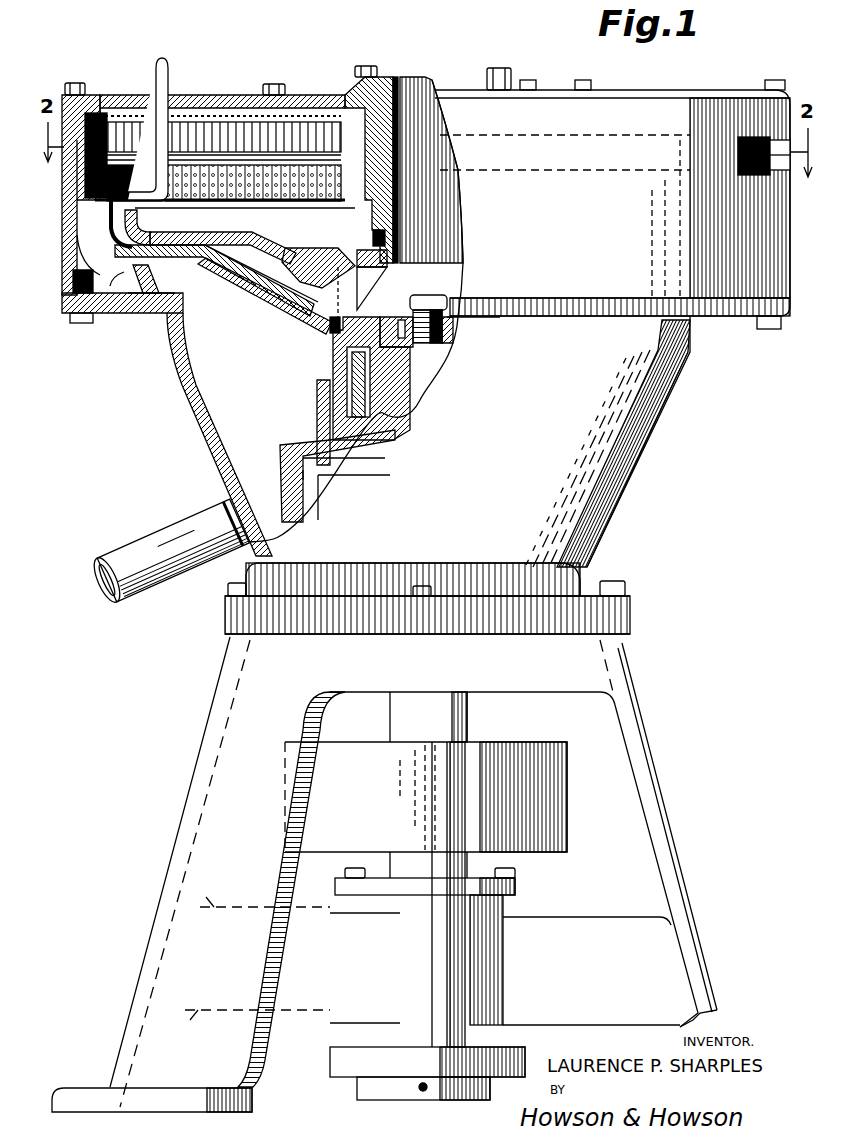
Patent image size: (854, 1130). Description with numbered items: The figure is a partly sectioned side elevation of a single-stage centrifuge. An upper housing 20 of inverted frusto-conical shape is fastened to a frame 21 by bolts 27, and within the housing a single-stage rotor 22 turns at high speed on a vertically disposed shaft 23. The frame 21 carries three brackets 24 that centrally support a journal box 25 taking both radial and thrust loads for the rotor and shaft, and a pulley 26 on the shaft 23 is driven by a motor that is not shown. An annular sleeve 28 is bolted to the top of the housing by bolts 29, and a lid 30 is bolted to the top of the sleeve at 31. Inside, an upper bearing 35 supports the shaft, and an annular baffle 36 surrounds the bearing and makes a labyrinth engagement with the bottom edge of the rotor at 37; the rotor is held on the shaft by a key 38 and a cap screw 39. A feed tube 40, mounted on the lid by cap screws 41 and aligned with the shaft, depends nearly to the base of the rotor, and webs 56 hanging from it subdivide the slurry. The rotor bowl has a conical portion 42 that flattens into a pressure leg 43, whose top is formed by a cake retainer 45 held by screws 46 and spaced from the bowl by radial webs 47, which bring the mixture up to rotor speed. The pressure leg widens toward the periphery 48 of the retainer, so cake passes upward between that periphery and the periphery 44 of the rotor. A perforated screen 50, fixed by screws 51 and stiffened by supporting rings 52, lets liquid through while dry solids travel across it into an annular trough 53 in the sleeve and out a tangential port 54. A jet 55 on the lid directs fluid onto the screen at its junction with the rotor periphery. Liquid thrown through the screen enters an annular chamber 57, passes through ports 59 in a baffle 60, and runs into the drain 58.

The upper housing 20 is at (660, 424).
The frame 21 is at (648, 764).
The single-stage rotor 22 is at (300, 330).
The shaft 23 is at (460, 360).
The brackets 24 is at (596, 930).
The journal box 25 is at (518, 888).
The pulley 26 is at (567, 778).
The bolts 27 is at (226, 590).
The annular sleeve 28 is at (776, 212).
The bolts 29 is at (82, 323).
The lid 30 is at (236, 95).
The bolts 31 is at (74, 83).
The upper bearing 35 is at (352, 476).
The annular baffle 36 is at (282, 484).
The labyrinth engagement 37 is at (330, 378).
The key 38 is at (402, 320).
The cap screw 39 is at (424, 300).
The feed tube 40 is at (416, 77).
The cap screws 41 is at (364, 66).
The conical or upwardly flared portion 42 is at (262, 295).
The pressure leg 43 is at (238, 274).
The periphery of the rotor 44 is at (106, 218).
The cake retainer 45 is at (232, 232).
The screws 46 is at (358, 240).
The webs 47 is at (292, 248).
The periphery of the retainer 48 is at (145, 218).
The perforated screen 50 is at (336, 168).
The screws 51 is at (108, 232).
The supporting rings 52 is at (66, 190).
The annular trough 53 is at (124, 105).
The tangential port 54 is at (745, 150).
The jet 55 is at (168, 72).
The webs 56 is at (340, 296).
The annular chamber 57 is at (131, 280).
The drain 58 is at (150, 545).
The ports 59 is at (158, 296).
The baffle 60 is at (155, 276).